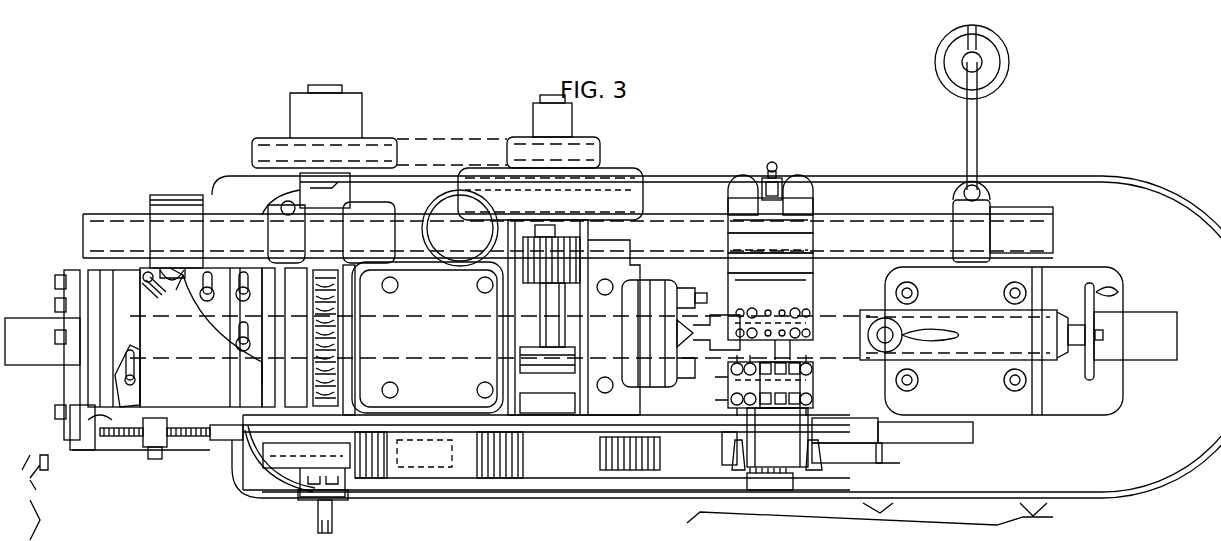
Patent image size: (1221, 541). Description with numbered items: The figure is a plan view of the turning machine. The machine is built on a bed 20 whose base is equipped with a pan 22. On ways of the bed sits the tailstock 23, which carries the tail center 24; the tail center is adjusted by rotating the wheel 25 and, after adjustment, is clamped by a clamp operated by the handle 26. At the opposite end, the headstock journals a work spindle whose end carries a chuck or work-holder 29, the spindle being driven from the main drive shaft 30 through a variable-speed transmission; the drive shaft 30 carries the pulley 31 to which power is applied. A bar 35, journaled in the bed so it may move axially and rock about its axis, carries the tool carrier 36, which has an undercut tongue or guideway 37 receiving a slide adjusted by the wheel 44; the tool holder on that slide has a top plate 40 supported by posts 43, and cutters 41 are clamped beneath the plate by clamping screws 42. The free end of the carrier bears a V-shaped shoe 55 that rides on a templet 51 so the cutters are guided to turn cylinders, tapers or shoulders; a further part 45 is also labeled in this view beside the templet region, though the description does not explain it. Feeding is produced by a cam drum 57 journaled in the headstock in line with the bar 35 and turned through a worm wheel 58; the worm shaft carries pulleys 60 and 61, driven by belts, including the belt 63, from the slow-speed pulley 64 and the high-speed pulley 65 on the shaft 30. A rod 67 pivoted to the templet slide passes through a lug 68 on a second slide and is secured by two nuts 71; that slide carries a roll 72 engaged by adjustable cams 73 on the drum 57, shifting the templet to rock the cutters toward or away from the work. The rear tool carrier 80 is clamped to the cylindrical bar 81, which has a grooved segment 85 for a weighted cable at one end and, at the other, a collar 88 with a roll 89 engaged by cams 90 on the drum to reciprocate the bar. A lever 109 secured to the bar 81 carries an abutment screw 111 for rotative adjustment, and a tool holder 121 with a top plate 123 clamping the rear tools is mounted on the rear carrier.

The bed 20 is at (1102, 270).
The pan 22 is at (1148, 192).
The tailstock 23 is at (972, 335).
The tail center 24 is at (812, 315).
The wheel 25 is at (1095, 310).
The handle 26 is at (922, 320).
The chuck or work-holder 29 is at (652, 290).
The main drive shaft 30 is at (560, 318).
The pulley 31 is at (615, 192).
The bar 35 is at (700, 315).
The tool carrier 36 is at (735, 475).
The undercut tongue or guideway 37 is at (810, 428).
The top plate 40 is at (815, 392).
The cutters 41 is at (735, 365).
The clamping screws 42 is at (779, 385).
The posts 43 is at (728, 403).
The wheel 44 is at (795, 482).
The plate 45 is at (913, 445).
The former or templet 51 is at (870, 460).
The V-shaped shoe 55 is at (838, 458).
The cam drum 57 is at (223, 337).
The worm wheel 58 is at (340, 350).
The pulley 60 is at (283, 465).
The pulley 61 is at (398, 150).
The belt 63 is at (455, 152).
The pulley 64 is at (455, 470).
The pulley 65 is at (590, 150).
The rod 67 is at (432, 430).
The lug 68 is at (155, 418).
The nuts 71 is at (140, 448).
The roll 72 is at (108, 425).
The cams 73 is at (130, 366).
The rear tool carrier 80 is at (800, 235).
The cylindrical bar 81 is at (700, 215).
The grooved segment 85 is at (1009, 75).
The collar 88 is at (198, 205).
The roll 89 is at (172, 280).
The cams 90 is at (150, 275).
The lever 109 is at (785, 185).
The abutment screw 111 is at (785, 155).
The tool holder 121 is at (790, 260).
The top plate 123 is at (800, 283).